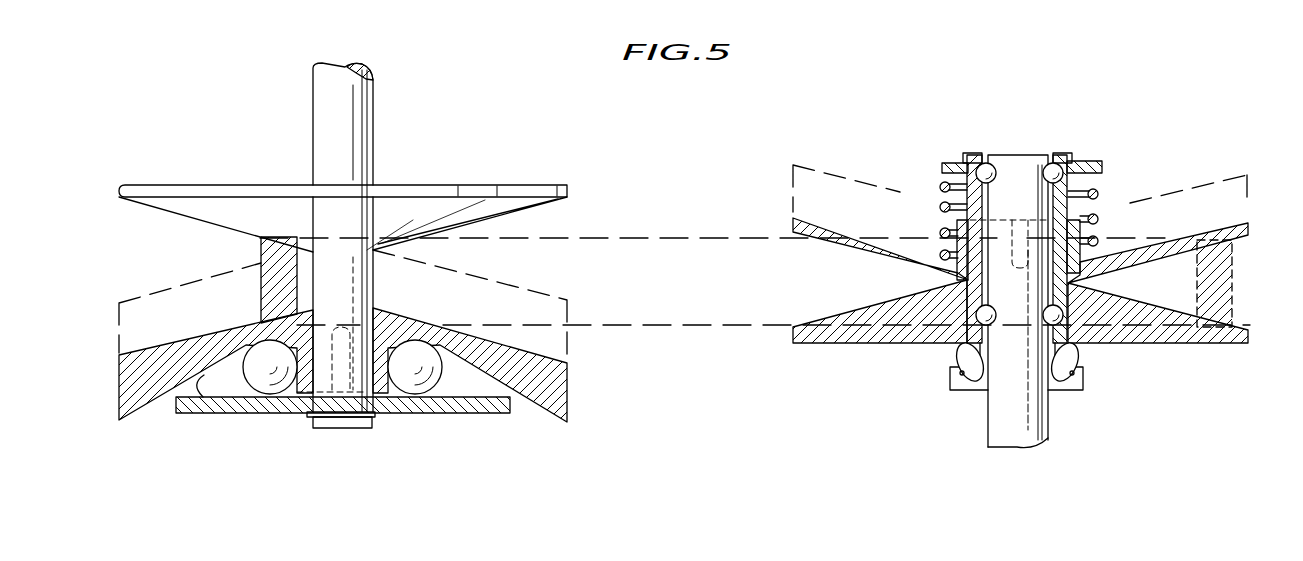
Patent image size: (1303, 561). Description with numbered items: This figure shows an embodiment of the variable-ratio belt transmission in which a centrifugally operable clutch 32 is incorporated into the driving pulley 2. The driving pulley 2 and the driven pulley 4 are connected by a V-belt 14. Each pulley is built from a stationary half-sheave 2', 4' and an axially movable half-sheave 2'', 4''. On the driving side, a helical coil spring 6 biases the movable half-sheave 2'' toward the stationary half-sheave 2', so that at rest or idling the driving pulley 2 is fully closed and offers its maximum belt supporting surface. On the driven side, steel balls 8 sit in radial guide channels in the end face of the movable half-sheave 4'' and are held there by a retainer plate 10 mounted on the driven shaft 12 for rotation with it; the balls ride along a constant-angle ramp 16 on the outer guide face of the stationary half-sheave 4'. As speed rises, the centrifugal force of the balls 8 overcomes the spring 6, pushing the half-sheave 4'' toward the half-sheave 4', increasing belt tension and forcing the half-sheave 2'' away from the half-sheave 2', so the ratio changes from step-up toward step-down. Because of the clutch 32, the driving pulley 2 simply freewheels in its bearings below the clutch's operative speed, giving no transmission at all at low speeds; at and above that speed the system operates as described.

The driving pulley 2 is at (1020, 283).
The stationary half-sheave 2' is at (1020, 340).
The axially movable half-sheave 2'' is at (1020, 237).
The driven pulley 4 is at (343, 363).
The stationary half-sheave 4' is at (343, 198).
The axially movable half-sheave 4'' is at (346, 385).
The helical coil spring 6 is at (1100, 194).
The steel balls 8 is at (413, 388).
The retainer plate 10 is at (245, 414).
The driven shaft 12 is at (348, 104).
The V-belt 14 is at (688, 213).
The ramp 16 is at (194, 410).
The centrifugally operable clutch 32 is at (960, 350).